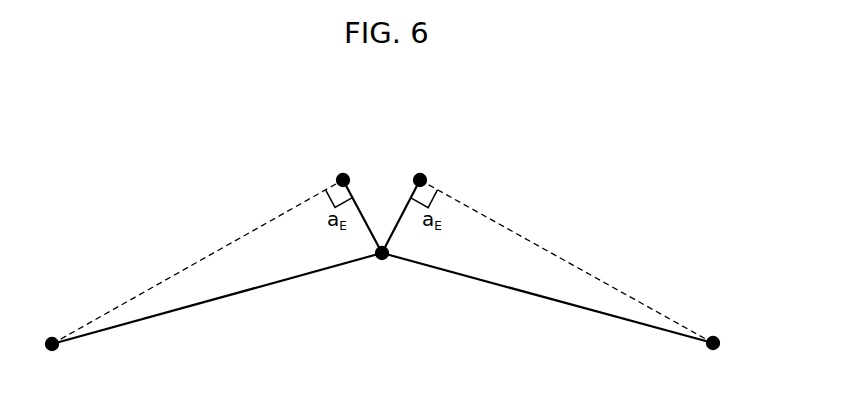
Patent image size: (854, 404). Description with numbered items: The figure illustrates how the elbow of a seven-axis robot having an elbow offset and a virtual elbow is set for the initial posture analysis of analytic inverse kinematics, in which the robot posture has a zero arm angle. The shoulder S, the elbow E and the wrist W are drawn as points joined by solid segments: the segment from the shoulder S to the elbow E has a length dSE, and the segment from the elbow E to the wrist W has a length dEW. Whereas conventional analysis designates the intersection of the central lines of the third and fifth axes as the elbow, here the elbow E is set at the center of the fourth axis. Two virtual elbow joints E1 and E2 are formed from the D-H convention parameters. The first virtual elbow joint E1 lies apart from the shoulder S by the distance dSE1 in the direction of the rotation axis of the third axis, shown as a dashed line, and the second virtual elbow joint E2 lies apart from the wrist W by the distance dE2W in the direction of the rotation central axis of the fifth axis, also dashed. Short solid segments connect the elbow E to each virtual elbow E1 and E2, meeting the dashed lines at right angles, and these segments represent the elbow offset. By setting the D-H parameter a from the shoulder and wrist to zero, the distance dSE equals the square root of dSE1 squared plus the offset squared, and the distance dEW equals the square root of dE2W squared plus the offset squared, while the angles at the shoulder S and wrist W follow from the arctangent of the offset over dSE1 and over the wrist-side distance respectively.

The shoulder S is at (51, 359).
The elbow E is at (382, 268).
The wrist W is at (722, 359).
The first virtual elbow joint E1 is at (329, 171).
The second virtual elbow joint E2 is at (434, 170).
The shoulder-to-elbow distance dSE is at (217, 298).
The elbow-to-wrist distance dEW is at (547, 298).
The shoulder-to-first-virtual-elbow distance dSE1 is at (197, 262).
The second-virtual-elbow-to-wrist distance dE2W is at (566, 261).